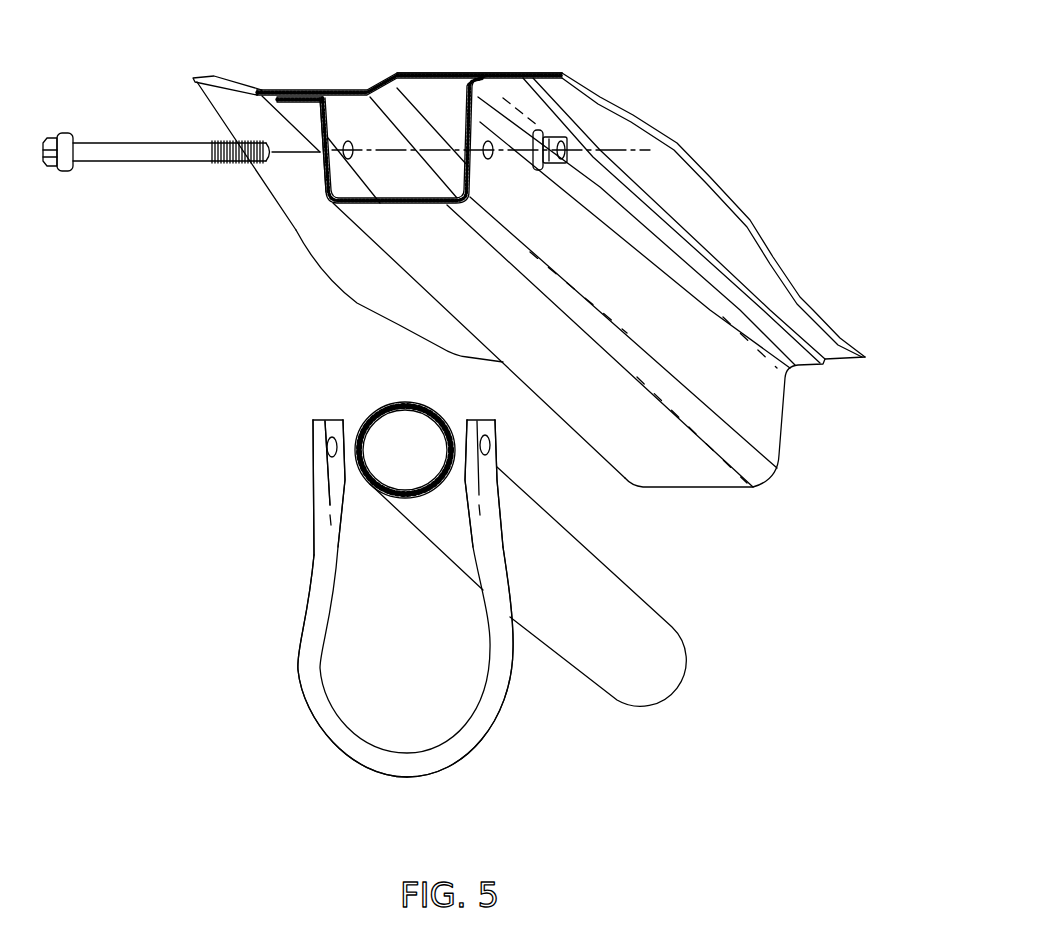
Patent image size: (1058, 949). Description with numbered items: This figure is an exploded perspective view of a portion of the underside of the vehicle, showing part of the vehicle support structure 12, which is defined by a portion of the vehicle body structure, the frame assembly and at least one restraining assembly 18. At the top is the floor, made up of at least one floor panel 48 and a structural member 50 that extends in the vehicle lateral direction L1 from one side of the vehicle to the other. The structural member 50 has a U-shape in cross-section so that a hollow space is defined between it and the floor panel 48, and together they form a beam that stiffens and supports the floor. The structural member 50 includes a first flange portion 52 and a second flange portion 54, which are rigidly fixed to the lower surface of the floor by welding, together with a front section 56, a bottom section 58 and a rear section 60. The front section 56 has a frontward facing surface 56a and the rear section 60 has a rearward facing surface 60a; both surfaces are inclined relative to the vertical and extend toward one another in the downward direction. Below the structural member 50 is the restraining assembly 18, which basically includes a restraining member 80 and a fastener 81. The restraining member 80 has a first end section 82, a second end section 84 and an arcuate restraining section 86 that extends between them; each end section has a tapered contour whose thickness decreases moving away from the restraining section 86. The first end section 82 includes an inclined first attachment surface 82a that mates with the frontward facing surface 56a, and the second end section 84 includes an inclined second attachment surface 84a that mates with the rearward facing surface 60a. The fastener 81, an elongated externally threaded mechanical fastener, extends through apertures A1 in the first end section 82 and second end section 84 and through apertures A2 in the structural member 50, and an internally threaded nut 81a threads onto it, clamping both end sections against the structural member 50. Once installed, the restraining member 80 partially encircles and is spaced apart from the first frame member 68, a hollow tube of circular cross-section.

The vehicle support structure 12 is at (189, 694).
The restraining assembly 18 is at (308, 567).
The floor panel 48 is at (410, 73).
The structural member 50 is at (470, 117).
The first flange portion 52 is at (298, 109).
The second flange portion 54 is at (702, 265).
The front section 56 is at (340, 133).
The frontward facing surface 56a is at (325, 167).
The bottom section 58 is at (448, 260).
The rear section 60 is at (583, 237).
The rearward facing surface 60a is at (753, 403).
The first frame member 68 is at (600, 610).
The restraining member 80 is at (465, 743).
The fastener 81 is at (127, 152).
The internally threaded nut 81a is at (554, 160).
The first end section 82 is at (313, 483).
The first attachment surface 82a is at (333, 470).
The second end section 84 is at (488, 485).
The second attachment surface 84a is at (467, 433).
The restraining section 86 is at (347, 743).
The apertures A1 is at (520, 422).
The apertures A2 is at (353, 158).
The vehicle lateral direction L1 is at (710, 106).